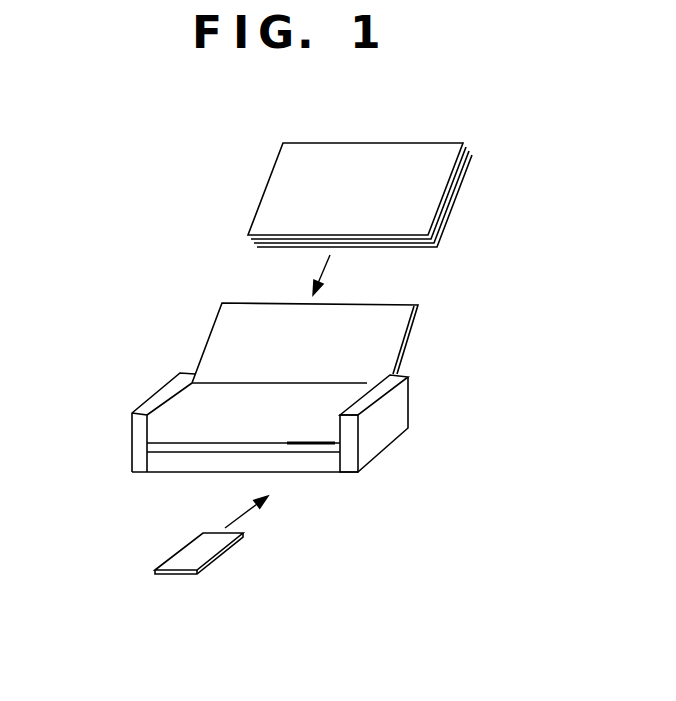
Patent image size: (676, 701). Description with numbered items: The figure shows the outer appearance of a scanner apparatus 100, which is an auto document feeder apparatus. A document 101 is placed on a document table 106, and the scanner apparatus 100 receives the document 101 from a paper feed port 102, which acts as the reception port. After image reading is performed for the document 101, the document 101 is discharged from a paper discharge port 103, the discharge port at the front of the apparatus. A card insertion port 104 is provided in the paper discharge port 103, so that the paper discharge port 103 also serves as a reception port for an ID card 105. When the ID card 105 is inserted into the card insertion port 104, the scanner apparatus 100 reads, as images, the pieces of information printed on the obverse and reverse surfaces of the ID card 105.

The scanner apparatus 100 is at (268, 397).
The document 101 is at (292, 141).
The paper feed port 102 is at (367, 382).
The paper discharge port 103 is at (130, 435).
The card insertion port 104 is at (315, 452).
The ID card 105 is at (210, 563).
The document table 106 is at (217, 318).